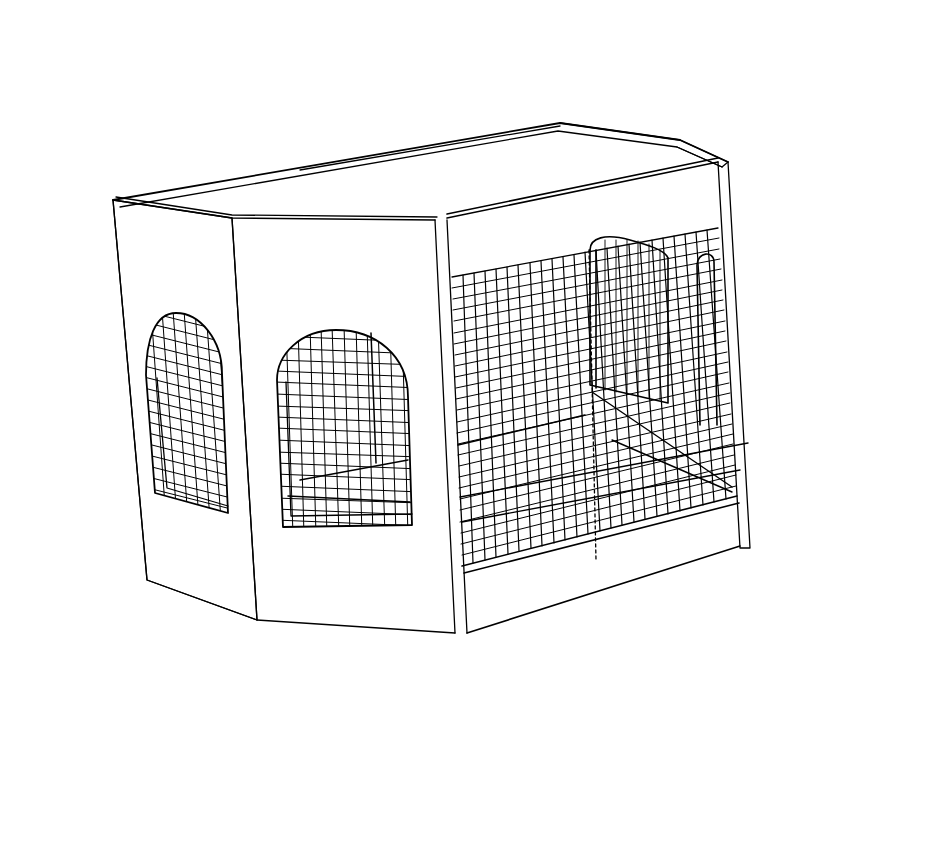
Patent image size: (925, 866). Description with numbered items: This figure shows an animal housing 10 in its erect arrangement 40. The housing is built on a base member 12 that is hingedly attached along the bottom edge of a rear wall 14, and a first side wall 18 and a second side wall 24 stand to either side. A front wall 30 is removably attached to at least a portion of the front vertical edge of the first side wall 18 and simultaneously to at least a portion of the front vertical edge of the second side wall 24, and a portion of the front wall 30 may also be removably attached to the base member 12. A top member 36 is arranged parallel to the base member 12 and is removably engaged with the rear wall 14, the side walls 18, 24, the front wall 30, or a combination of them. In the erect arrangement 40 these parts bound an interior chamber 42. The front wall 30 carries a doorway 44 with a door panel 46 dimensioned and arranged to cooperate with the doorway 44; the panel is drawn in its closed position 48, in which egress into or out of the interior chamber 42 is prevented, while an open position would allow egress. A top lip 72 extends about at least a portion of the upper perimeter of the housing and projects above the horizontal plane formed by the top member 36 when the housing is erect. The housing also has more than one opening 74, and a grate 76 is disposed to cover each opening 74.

The animal housing 10 is at (120, 48).
The base member 12 is at (484, 655).
The rear wall 14 is at (372, 158).
The first side wall 18 is at (137, 270).
The second side wall 24 is at (668, 132).
The front wall 30 is at (710, 205).
The top member 36 is at (470, 165).
The erect arrangement 40 is at (203, 166).
The interior chamber 42 is at (370, 408).
The doorway 44 is at (735, 432).
The door panel 46 is at (725, 490).
The closed position 48 is at (690, 356).
The top lip 72 is at (604, 126).
The opening 74 is at (165, 425).
The grate 76 is at (175, 450).